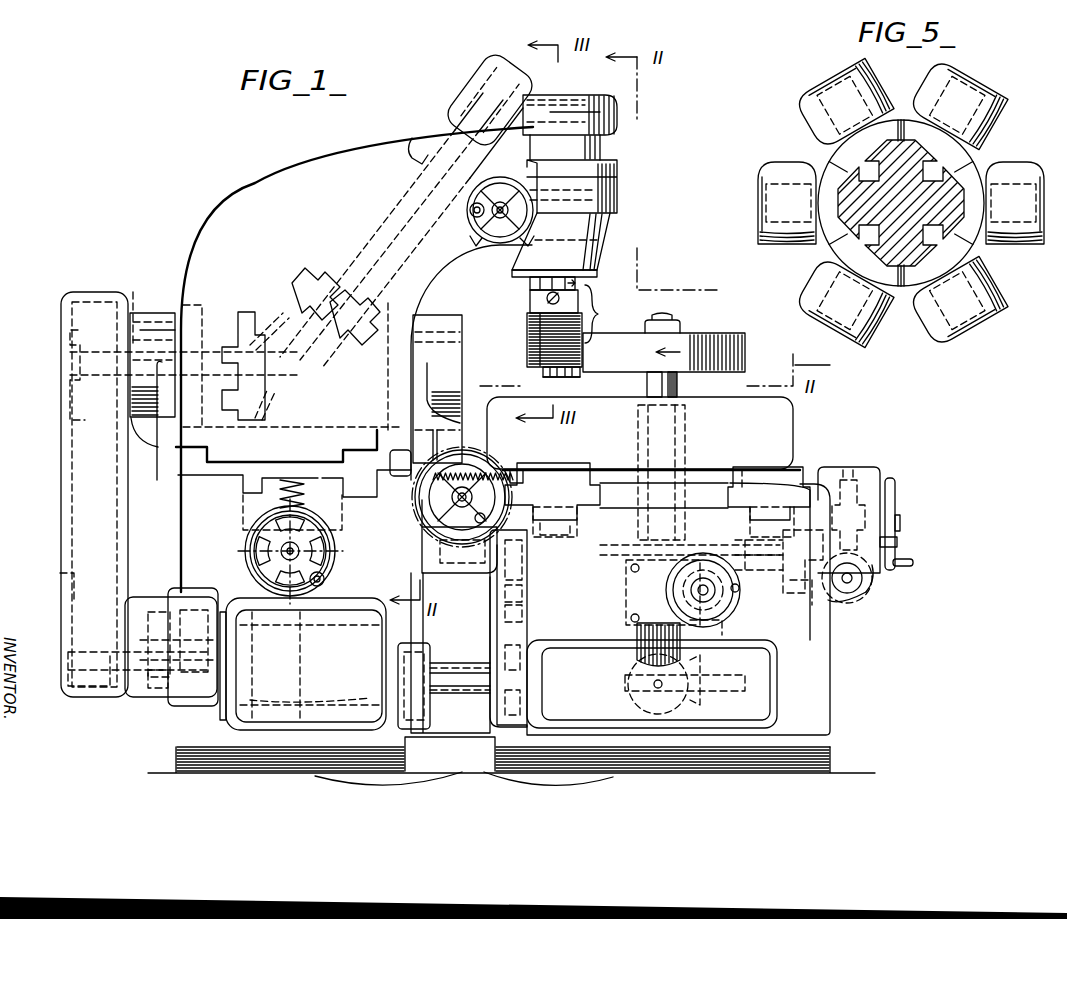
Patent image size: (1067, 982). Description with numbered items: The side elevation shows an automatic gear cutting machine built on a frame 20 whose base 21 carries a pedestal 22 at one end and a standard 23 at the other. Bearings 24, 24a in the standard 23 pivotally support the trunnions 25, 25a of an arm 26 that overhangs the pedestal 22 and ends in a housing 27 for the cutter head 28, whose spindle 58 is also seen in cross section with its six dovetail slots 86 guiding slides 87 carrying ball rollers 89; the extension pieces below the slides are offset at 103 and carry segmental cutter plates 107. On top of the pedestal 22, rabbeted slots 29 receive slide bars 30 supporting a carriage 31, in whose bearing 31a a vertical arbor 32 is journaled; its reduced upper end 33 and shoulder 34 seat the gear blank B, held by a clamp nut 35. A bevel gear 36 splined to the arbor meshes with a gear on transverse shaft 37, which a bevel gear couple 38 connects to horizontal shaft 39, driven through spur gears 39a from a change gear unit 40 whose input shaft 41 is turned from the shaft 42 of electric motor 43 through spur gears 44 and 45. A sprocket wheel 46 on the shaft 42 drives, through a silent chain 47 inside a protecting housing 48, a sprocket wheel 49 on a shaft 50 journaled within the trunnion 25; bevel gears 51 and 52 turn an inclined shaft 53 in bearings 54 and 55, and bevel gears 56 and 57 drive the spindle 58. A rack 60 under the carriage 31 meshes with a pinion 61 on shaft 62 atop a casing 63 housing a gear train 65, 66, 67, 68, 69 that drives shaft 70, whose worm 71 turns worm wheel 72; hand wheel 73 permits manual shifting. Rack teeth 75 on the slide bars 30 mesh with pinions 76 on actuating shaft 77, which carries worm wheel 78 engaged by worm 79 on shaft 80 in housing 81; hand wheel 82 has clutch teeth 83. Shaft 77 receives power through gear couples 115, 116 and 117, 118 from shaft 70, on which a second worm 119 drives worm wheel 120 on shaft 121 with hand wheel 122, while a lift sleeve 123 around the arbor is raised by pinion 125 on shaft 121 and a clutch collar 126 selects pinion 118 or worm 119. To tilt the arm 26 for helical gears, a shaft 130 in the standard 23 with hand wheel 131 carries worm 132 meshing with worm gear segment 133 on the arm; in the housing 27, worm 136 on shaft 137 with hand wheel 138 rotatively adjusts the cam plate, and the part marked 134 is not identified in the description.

In FIG. 1, the frame 20 is at (464, 783).
In FIG. 1, the base 21 is at (176, 752).
In FIG. 1, the pedestal 22 is at (820, 660).
In FIG. 1, the standard 23 is at (180, 533).
In FIG. 1, the bearing 24 is at (161, 313).
In FIG. 1, the bearing 24a is at (440, 322).
In FIG. 1, the trunnion 25 is at (136, 300).
In FIG. 1, the trunnion 25a is at (460, 336).
In FIG. 1, the arm 26 is at (262, 190).
In FIG. 1, the housing 27 is at (617, 149).
In FIG. 1, the cutter head 28 is at (606, 314).
In FIG. 1, the rabbeted slots 29 is at (590, 500).
In FIG. 1, the slide bars 30 is at (556, 466).
In FIG. 1, the carriage 31 is at (795, 425).
In FIG. 1, the bearing 31a is at (638, 428).
In FIG. 1, the vertical arbor 32 is at (647, 385).
In FIG. 1, the reduced upper end 33 is at (645, 352).
In FIG. 1, the shoulder 34 is at (678, 380).
In FIG. 1, the clamp nut 35 is at (681, 322).
In FIG. 1, the bevel gear 36 is at (700, 664).
In FIG. 1, the transverse shaft 37 is at (632, 672).
In FIG. 1, the bevel gear couple 38 is at (700, 700).
In FIG. 1, the horizontal shaft 39 is at (596, 699).
In FIG. 1, the spur gears 39a is at (396, 686).
In FIG. 1, the change gear unit 40 is at (362, 608).
In FIG. 1, the input shaft 41 is at (183, 612).
In FIG. 1, the motor shaft 42 is at (155, 648).
In FIG. 1, the electric motor 43 is at (221, 710).
In FIG. 1, the spur gear 44 is at (153, 696).
In FIG. 1, the spur gear 45 is at (150, 604).
In FIG. 1, the sprocket wheel 46 is at (70, 648).
In FIG. 1, the silent chain 47 is at (60, 573).
In FIG. 1, the protecting housing 48 is at (62, 504).
In FIG. 1, the sprocket wheel 49 is at (72, 405).
In FIG. 1, the shaft 50 is at (82, 352).
In FIG. 1, the bevel gear 51 is at (248, 312).
In FIG. 1, the bevel gear 52 is at (323, 380).
In FIG. 1, the inclined shaft 53 is at (375, 223).
In FIG. 1, the bearing 54 is at (305, 268).
In FIG. 1, the bearing 55 is at (414, 158).
In FIG. 1, the bevel gear 56 is at (486, 80).
In FIG. 1, the bevel gear 57 is at (575, 95).
In FIG. 1, the spindle 58 is at (541, 378).
In FIG. 5, the spindle 58 is at (901, 203).
In FIG. 1, the toothed rack 60 is at (518, 470).
In FIG. 1, the spur pinion 61 is at (494, 468).
In FIG. 1, the transverse shaft 62 is at (463, 462).
In FIG. 1, the protective casing 63 is at (412, 462).
In FIG. 1, the spur gear 65 is at (530, 700).
In FIG. 1, the spur gear 66 is at (530, 657).
In FIG. 1, the spur gear 67 is at (530, 612).
In FIG. 1, the spur gear 68 is at (530, 597).
In FIG. 1, the spur gear 69 is at (530, 572).
In FIG. 1, the horizontal shaft 70 is at (420, 553).
In FIG. 1, the worm 71 is at (452, 563).
In FIG. 1, the worm wheel 72 is at (418, 514).
In FIG. 1, the hand wheel 73 is at (421, 500).
In FIG. 1, the rack teeth 75 is at (663, 511).
In FIG. 1, the spur pinions 76 is at (565, 530).
In FIG. 1, the horizontal actuating shaft 77 is at (901, 520).
In FIG. 1, the worm wheel 78 is at (849, 480).
In FIG. 1, the worm 79 is at (858, 600).
In FIG. 1, the crosswise shaft 80 is at (860, 581).
In FIG. 1, the housing 81 is at (873, 472).
In FIG. 1, the hand wheel 82 is at (896, 489).
In FIG. 1, the clutch teeth 83 is at (898, 542).
In FIG. 5, the longitudinal slots 86 is at (920, 203).
In FIG. 1, the slides 87 is at (530, 284).
In FIG. 5, the slides 87 is at (915, 123).
In FIG. 5, the ball rollers 89 is at (815, 122).
In FIG. 1, the laterally offset upper ends 103 is at (536, 322).
In FIG. 1, the segmental cutter plates 107 is at (536, 347).
In FIG. 1, the bevel gear couple 115 is at (878, 570).
In FIG. 1, the bevel gear couple 116 is at (831, 606).
In FIG. 1, the spur gear couple 117 is at (820, 588).
In FIG. 1, the pinion 118 is at (796, 546).
In FIG. 1, the second worm 119 is at (690, 535).
In FIG. 1, the worm wheel 120 is at (670, 591).
In FIG. 1, the transverse shaft 121 is at (638, 618).
In FIG. 1, the hand wheel 122 is at (640, 570).
In FIG. 1, the ball bearing lift sleeve 123 is at (626, 598).
In FIG. 1, the spur pinion 125 is at (740, 605).
In FIG. 1, the sliding clutch collar 126 is at (740, 589).
In FIG. 1, the transverse shaft 130 is at (298, 552).
In FIG. 1, the hand wheel 131 is at (325, 581).
In FIG. 1, the worm 132 is at (252, 549).
In FIG. 1, the worm gear segment 133 is at (276, 500).
In FIG. 1, the shaft 134 is at (722, 622).
In FIG. 1, the worm 136 is at (502, 200).
In FIG. 1, the transverse shaft 137 is at (496, 243).
In FIG. 1, the hand wheel 138 is at (473, 217).
In FIG. 1, the gear wheel blank B is at (822, 364).